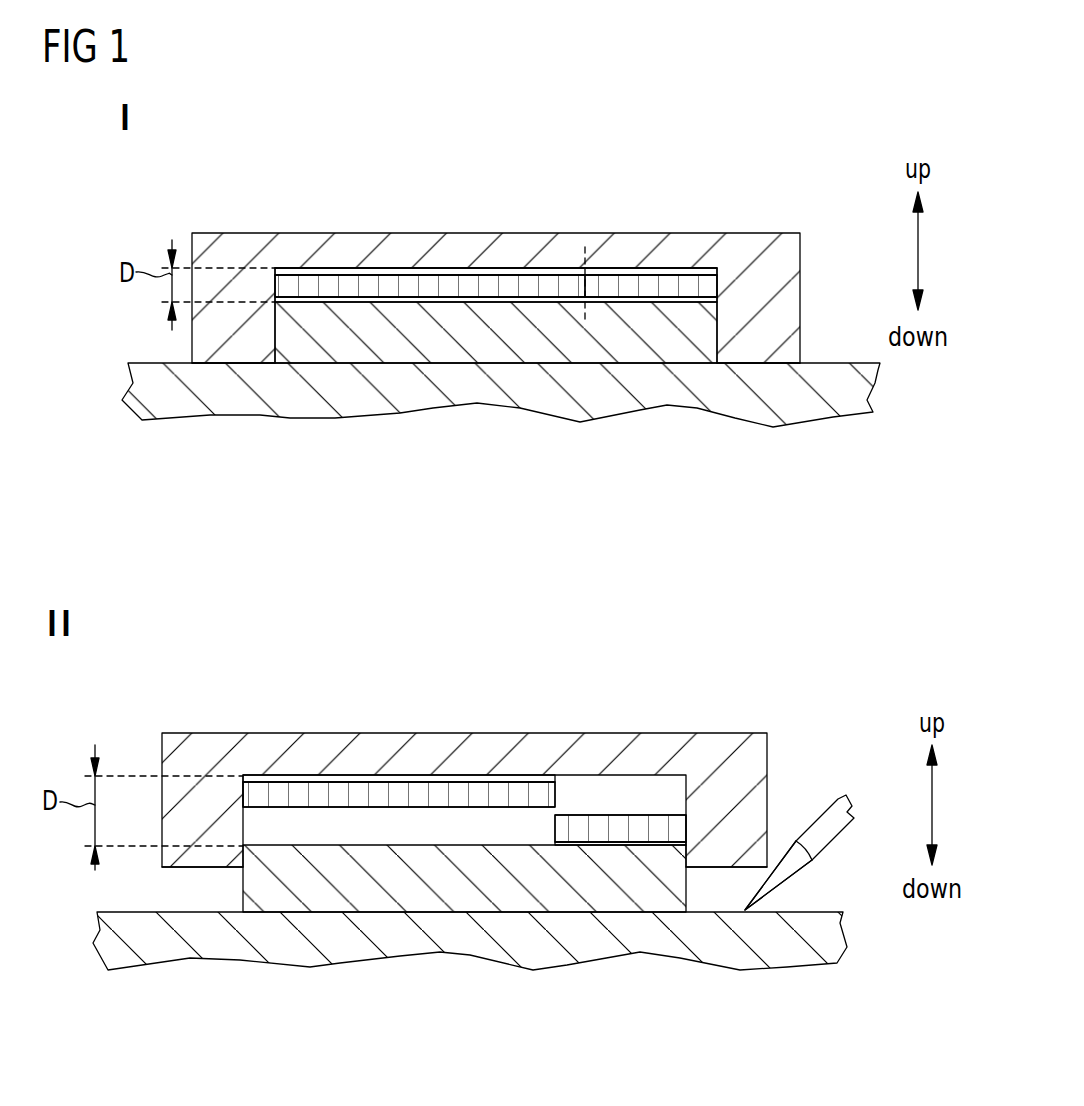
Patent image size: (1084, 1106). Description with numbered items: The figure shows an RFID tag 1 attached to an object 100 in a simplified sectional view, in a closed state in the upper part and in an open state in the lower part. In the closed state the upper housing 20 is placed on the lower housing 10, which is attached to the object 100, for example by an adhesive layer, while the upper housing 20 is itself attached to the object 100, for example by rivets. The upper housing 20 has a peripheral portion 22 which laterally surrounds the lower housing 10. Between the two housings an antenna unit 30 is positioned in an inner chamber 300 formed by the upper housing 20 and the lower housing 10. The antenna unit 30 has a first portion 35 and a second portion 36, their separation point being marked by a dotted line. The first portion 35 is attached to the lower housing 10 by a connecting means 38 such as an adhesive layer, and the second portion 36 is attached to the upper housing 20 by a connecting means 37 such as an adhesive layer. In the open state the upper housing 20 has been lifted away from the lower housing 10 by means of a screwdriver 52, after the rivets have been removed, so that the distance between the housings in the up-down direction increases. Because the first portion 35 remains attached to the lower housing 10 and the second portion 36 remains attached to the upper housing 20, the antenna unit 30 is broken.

The RFID tag 1 is at (768, 174).
The lower housing 10 is at (487, 345).
The upper housing 20 is at (480, 248).
The peripheral portion 22 is at (788, 258).
The antenna unit 30 is at (480, 511).
The first portion of the antenna unit 35 is at (650, 276).
The second portion of the antenna unit 36 is at (388, 290).
The connecting means 37 is at (297, 270).
The connecting means 38 is at (640, 300).
The screwdriver 52 is at (818, 843).
The object 100 is at (718, 403).
The inner chamber 300 is at (512, 272).